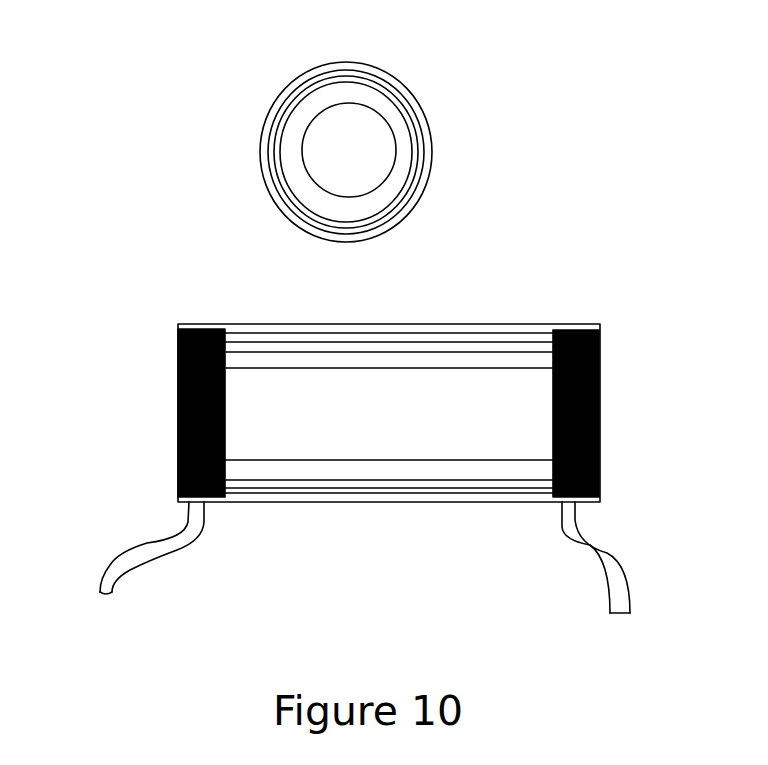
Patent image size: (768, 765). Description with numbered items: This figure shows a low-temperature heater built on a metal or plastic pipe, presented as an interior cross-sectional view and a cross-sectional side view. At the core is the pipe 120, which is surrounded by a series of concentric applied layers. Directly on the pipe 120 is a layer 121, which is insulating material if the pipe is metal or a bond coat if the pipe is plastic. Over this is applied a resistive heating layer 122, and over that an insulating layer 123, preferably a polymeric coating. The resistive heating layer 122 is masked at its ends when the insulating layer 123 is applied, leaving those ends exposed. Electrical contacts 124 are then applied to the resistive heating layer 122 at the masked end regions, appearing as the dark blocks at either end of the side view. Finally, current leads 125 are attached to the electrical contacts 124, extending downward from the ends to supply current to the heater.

The pipe 120 is at (375, 362).
The layer of insulating material or bond coat 121 is at (305, 348).
The resistive heating layer 122 is at (130, 262).
The insulating layer 123 is at (445, 282).
The electrical contacts 124 is at (387, 413).
The current leads 125 is at (128, 570).